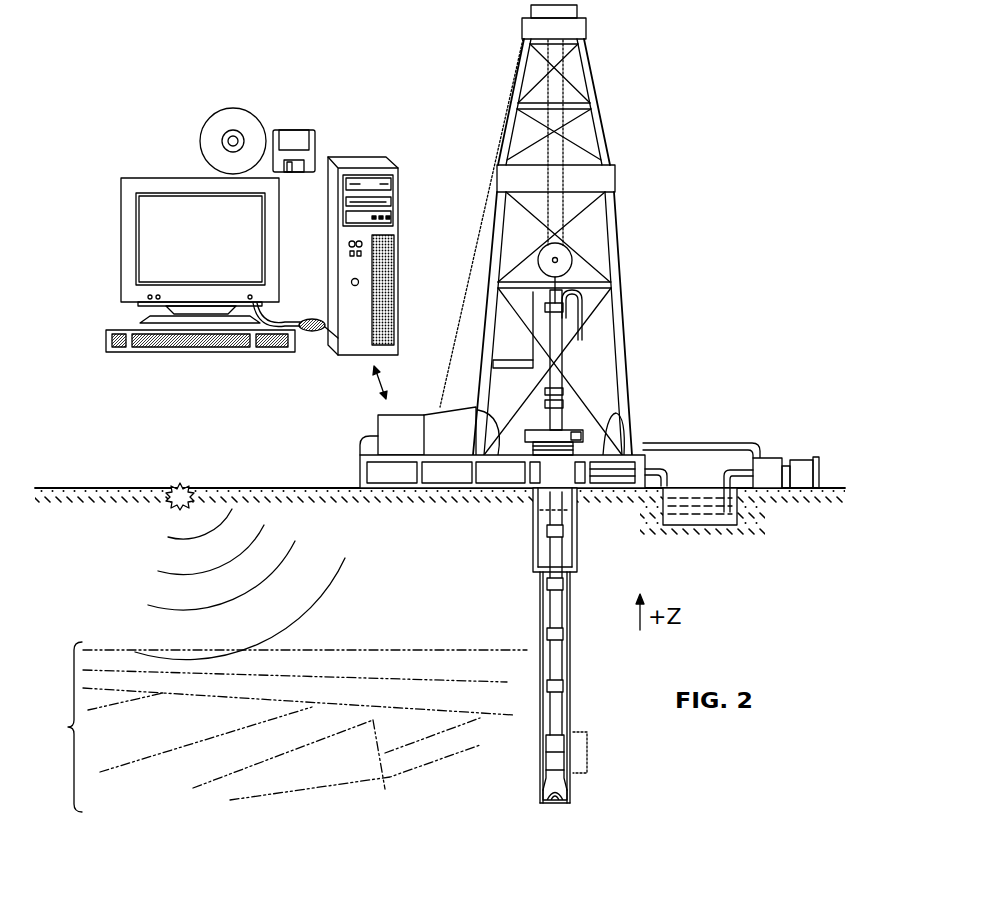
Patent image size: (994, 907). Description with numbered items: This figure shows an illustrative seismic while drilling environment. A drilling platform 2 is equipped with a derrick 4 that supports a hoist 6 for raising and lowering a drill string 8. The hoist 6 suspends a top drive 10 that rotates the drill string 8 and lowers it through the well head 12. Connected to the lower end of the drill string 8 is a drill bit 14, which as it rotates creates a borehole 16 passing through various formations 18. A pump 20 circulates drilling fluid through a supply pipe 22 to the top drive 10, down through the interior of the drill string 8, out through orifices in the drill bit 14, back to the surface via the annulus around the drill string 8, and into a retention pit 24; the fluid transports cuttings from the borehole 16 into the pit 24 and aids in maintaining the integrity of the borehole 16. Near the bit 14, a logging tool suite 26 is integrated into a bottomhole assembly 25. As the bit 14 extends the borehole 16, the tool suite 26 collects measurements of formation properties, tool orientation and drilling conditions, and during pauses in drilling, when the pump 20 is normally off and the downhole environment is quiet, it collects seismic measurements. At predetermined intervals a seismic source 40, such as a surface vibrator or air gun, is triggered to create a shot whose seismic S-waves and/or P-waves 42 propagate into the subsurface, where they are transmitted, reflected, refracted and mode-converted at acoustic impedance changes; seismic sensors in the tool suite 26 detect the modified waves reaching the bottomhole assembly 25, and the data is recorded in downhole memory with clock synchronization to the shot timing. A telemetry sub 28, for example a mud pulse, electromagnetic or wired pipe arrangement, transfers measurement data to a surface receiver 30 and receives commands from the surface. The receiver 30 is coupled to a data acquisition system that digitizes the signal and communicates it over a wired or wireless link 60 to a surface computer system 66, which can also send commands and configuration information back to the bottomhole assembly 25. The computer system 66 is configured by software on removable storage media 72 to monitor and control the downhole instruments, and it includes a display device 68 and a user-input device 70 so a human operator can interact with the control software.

The drilling platform 2 is at (358, 465).
The derrick 4 is at (596, 136).
The hoist 6 is at (567, 270).
The drill string 8 is at (558, 617).
The top drive 10 is at (553, 327).
The well head 12 is at (575, 428).
The drill bit 14 is at (562, 792).
The borehole 16 is at (572, 620).
The formations 18 is at (280, 727).
The pump 20 is at (763, 463).
The supply pipe 22 is at (710, 443).
The retention pit 24 is at (680, 512).
The bottomhole assembly 25 is at (587, 752).
The logging tool suite 26 is at (545, 766).
The telemetry sub 28 is at (547, 747).
The surface receiver 30 is at (562, 393).
The seismic source 40 is at (185, 487).
The seismic waves 42 is at (170, 568).
The link 60 is at (366, 386).
The surface computer system 66 is at (330, 288).
The display device 68 is at (135, 302).
The user-input device 70 is at (126, 352).
The removable storage media 72 is at (302, 128).